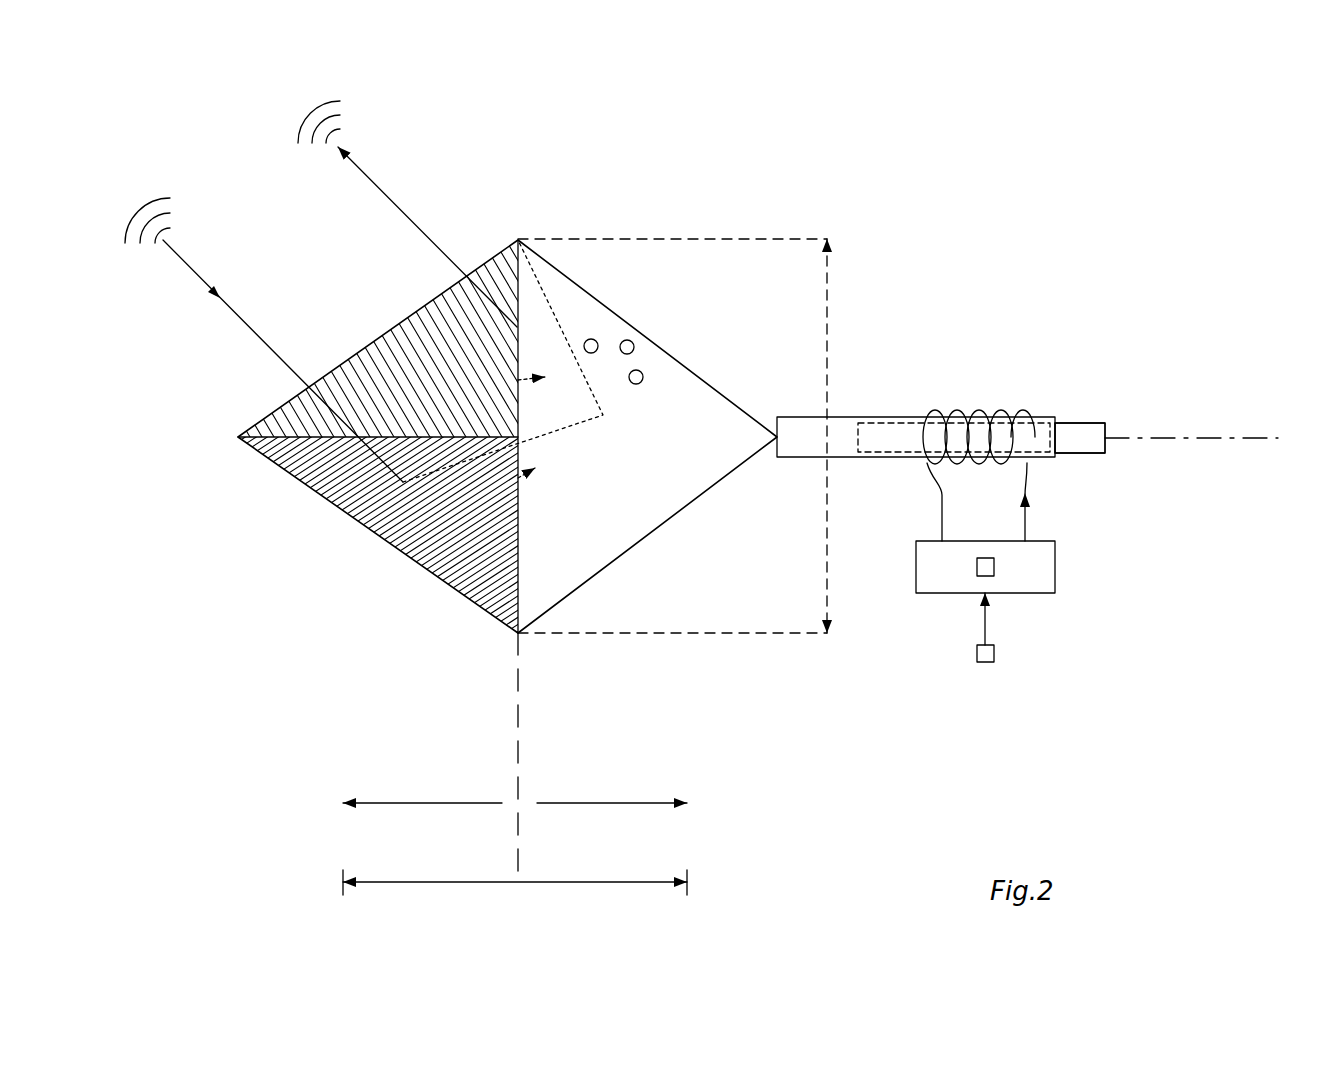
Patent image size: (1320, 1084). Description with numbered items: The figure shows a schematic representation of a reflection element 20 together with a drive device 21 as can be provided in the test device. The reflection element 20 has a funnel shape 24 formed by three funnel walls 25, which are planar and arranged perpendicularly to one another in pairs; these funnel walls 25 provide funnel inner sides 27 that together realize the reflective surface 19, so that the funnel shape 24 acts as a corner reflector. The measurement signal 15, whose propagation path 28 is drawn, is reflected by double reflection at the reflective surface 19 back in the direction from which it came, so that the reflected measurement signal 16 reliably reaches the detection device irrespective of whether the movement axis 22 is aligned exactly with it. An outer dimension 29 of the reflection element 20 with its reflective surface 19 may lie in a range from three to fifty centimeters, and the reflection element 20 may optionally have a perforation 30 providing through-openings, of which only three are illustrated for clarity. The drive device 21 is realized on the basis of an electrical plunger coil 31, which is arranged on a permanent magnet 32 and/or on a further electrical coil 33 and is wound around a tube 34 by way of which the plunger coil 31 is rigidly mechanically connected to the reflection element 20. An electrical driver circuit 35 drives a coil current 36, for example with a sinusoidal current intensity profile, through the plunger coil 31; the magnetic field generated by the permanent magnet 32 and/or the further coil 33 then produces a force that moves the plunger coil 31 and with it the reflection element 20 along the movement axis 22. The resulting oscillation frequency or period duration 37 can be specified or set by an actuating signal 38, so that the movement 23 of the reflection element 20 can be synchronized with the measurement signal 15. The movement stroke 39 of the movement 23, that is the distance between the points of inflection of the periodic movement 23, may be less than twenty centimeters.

The measurement signal 15 is at (172, 204).
The reflected measurement signal 16 is at (298, 120).
The reflective surface 19 is at (518, 380).
The reflection element 20 is at (622, 313).
The drive device 21 is at (943, 352).
The movement axis 22 is at (1150, 438).
The movement 23 is at (425, 803).
The funnel shape 24 is at (404, 588).
The funnel walls 25 is at (498, 252).
The funnel inner sides 27 is at (430, 353).
The propagation path 28 is at (257, 322).
The outer dimension 29 is at (827, 520).
The perforation 30 is at (598, 343).
The electrical plunger coil 31 is at (1022, 410).
The permanent magnet 32 is at (1075, 423).
The further electrical coil 33 is at (1075, 423).
The tube 34 is at (885, 417).
The electrical driver circuit 35 is at (1055, 568).
The coil current 36 is at (1028, 522).
The oscillation frequency or period duration 37 is at (978, 572).
The actuating signal 38 is at (994, 653).
The movement stroke 39 is at (580, 882).